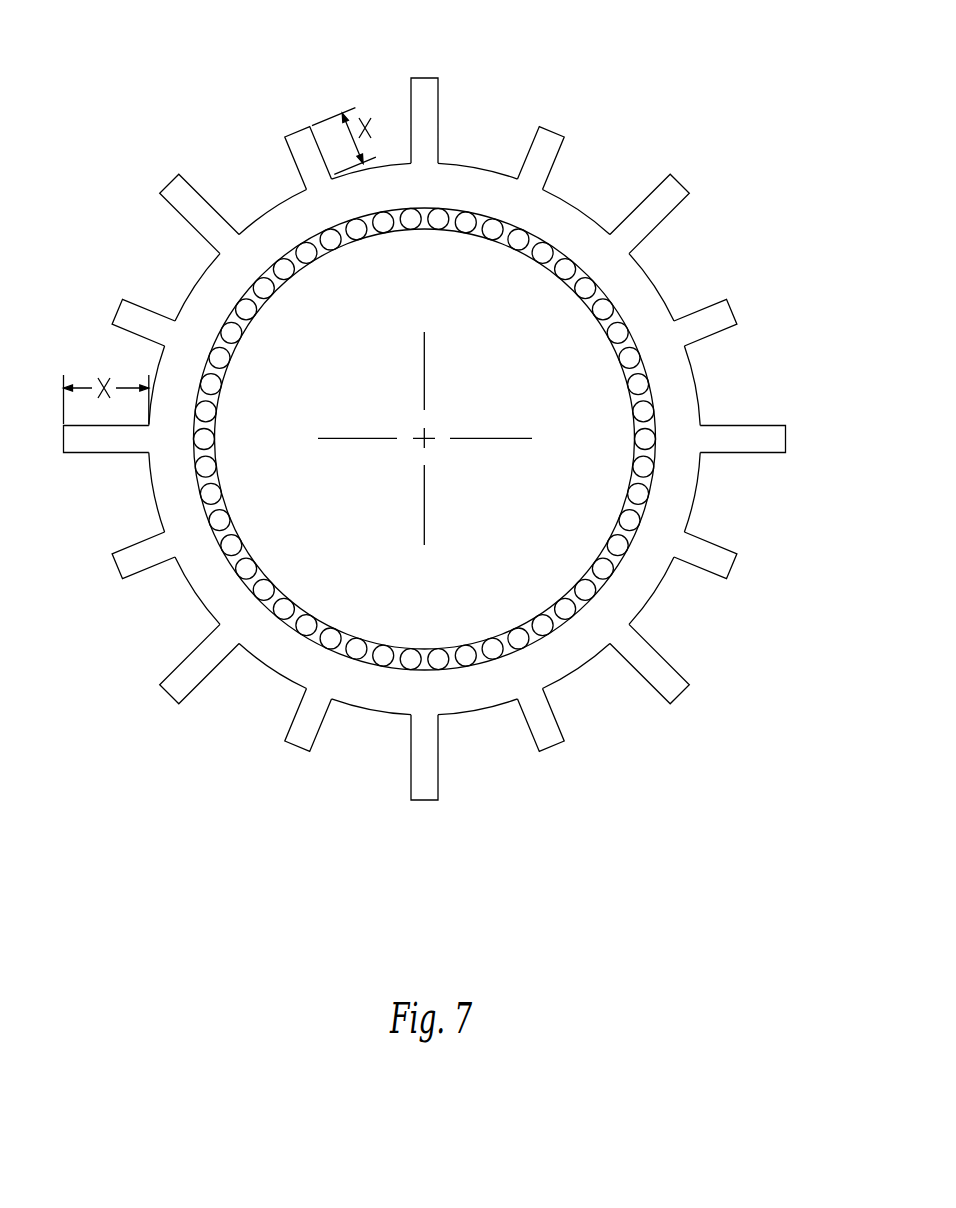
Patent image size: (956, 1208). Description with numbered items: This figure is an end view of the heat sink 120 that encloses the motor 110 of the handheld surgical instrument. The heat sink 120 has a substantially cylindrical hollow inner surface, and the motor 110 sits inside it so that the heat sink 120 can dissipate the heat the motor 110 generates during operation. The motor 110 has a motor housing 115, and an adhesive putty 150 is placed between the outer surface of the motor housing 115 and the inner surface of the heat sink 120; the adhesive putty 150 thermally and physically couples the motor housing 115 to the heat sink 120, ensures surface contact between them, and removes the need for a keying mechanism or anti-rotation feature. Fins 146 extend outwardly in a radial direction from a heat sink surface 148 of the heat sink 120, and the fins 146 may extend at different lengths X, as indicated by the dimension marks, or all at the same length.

The motor 110 is at (400, 263).
The motor housing 115 is at (228, 517).
The heat sink 120 is at (679, 493).
The fins 146 is at (763, 453).
The heat sink surface 148 is at (648, 600).
The adhesive putty 150 is at (645, 408).